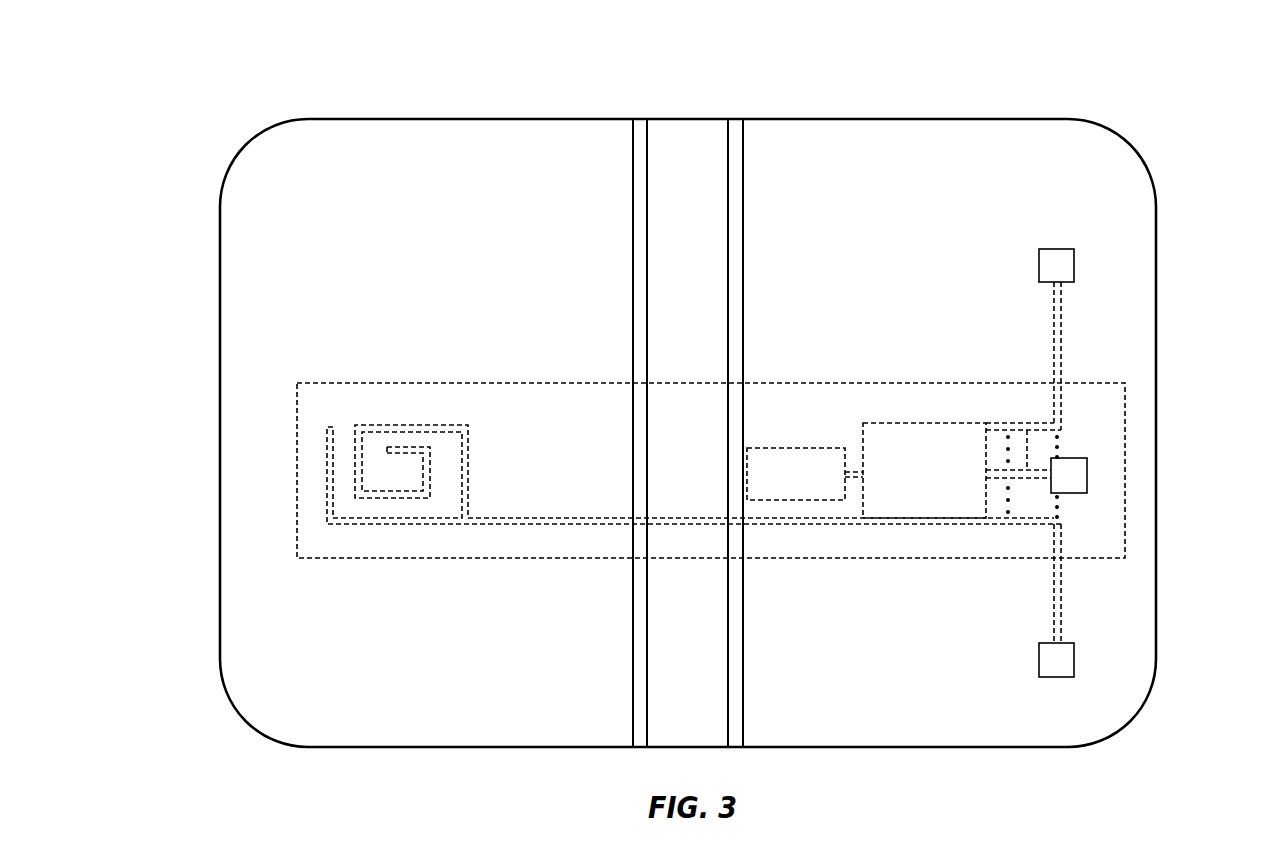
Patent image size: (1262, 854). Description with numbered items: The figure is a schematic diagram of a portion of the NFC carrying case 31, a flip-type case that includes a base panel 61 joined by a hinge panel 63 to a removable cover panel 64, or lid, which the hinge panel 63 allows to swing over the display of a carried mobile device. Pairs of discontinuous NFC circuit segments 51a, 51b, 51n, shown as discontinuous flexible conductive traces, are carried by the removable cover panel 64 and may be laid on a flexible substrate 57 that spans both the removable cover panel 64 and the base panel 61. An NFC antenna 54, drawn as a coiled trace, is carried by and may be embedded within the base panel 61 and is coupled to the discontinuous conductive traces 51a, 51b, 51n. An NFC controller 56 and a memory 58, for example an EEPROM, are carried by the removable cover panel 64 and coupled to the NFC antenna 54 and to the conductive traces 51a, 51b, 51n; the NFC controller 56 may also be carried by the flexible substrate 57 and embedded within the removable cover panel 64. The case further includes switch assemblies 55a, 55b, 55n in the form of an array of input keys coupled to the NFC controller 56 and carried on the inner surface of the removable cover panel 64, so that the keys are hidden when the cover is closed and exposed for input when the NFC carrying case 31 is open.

The NFC carrying case 31 is at (277, 90).
The base panel 61 is at (220, 262).
The hinge panel 63 is at (695, 119).
The removable cover panel 64 is at (1157, 618).
The flexible substrate 57 is at (297, 492).
The NFC antenna 54 is at (327, 448).
The NFC controller 56 is at (938, 518).
The memory 58 is at (813, 500).
The discontinuous NFC circuit segment 51a is at (1025, 524).
The discontinuous NFC circuit segment 51b is at (1027, 430).
The discontinuous NFC circuit segment 51n is at (1054, 360).
The switch assembly 55a is at (1039, 655).
The switch assembly 55b is at (1087, 472).
The switch assembly 55n is at (1060, 249).